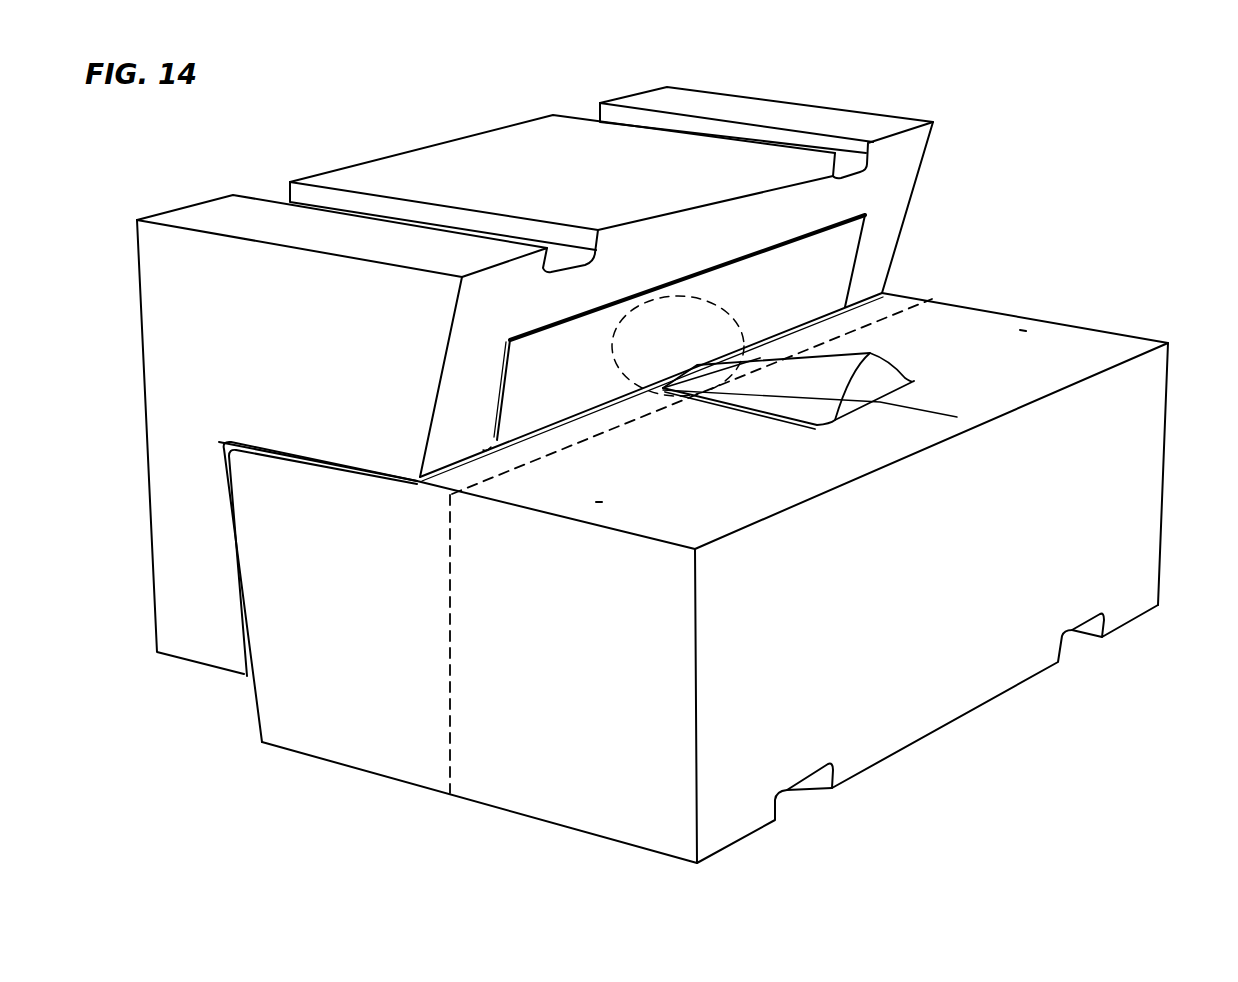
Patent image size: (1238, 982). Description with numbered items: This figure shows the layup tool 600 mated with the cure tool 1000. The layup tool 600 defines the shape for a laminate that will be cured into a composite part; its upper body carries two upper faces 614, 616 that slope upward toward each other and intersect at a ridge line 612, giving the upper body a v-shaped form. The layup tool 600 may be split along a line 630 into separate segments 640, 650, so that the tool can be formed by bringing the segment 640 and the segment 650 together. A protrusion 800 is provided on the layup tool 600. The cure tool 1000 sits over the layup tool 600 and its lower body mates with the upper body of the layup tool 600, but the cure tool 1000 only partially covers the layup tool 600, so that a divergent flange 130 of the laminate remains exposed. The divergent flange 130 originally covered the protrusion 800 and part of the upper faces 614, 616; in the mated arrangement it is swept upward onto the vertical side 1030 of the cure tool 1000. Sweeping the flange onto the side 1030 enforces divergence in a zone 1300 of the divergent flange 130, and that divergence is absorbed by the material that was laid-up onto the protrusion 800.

The cure tool 1000 is at (936, 106).
The vertical side 1030 is at (900, 186).
The divergent flange 130 is at (840, 262).
The zone 1300 is at (677, 297).
The layup tool 600 is at (1152, 308).
The upper face 616 is at (992, 332).
The upper face 614 is at (668, 491).
The ridge line 612 is at (937, 410).
The line 630 is at (453, 688).
The segment 640 is at (343, 773).
The segment 650 is at (520, 830).
The protrusion 800 is at (875, 366).